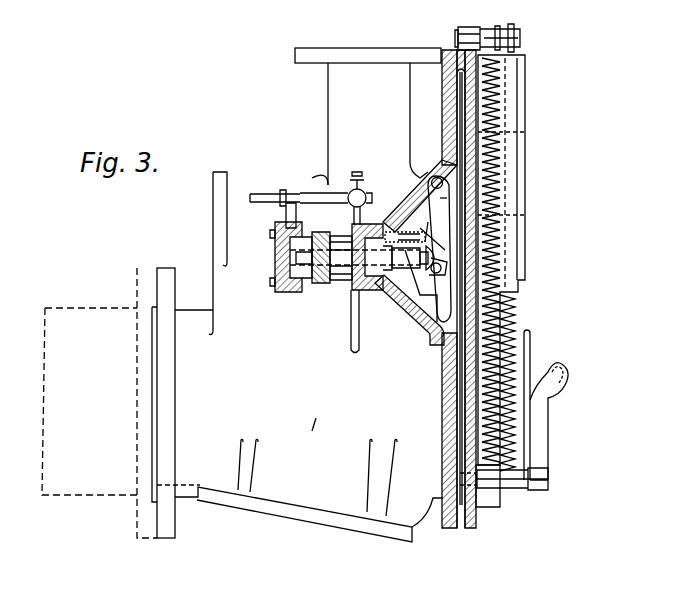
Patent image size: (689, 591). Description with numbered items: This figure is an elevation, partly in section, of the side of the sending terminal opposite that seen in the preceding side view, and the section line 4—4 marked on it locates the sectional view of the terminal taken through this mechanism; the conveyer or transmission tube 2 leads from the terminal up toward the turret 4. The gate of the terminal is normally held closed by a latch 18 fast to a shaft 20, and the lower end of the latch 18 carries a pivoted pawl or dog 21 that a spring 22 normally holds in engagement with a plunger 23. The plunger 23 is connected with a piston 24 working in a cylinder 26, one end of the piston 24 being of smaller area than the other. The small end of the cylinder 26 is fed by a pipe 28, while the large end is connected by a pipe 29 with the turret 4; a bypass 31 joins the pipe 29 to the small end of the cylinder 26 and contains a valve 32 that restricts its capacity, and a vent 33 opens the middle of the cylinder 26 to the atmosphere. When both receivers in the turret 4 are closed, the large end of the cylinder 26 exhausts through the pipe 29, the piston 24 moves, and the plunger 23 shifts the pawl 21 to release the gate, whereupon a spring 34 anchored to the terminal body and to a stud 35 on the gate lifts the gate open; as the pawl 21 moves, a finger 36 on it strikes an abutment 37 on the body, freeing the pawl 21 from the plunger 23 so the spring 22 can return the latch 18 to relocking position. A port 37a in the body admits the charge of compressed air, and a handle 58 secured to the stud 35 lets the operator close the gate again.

The conveyer or transmission tube 2 is at (70, 500).
The turret 4 is at (436, 160).
The latch 18 is at (444, 204).
The shaft 20 is at (443, 181).
The pawl or dog 21 is at (412, 312).
The spring 22 is at (430, 244).
The plunger 23 is at (392, 274).
The piston 24 is at (340, 268).
The cylinder 26 is at (296, 292).
The pipe 28 is at (350, 352).
The pipe 29 is at (258, 194).
The bypass 31 is at (322, 194).
The valve 32 is at (360, 178).
The vent 33 is at (322, 232).
The spring 34 is at (517, 305).
The stud 35 is at (549, 478).
The finger 36 is at (432, 322).
The abutment 37 is at (405, 333).
The port 37a is at (410, 88).
The handle 58 is at (560, 386).